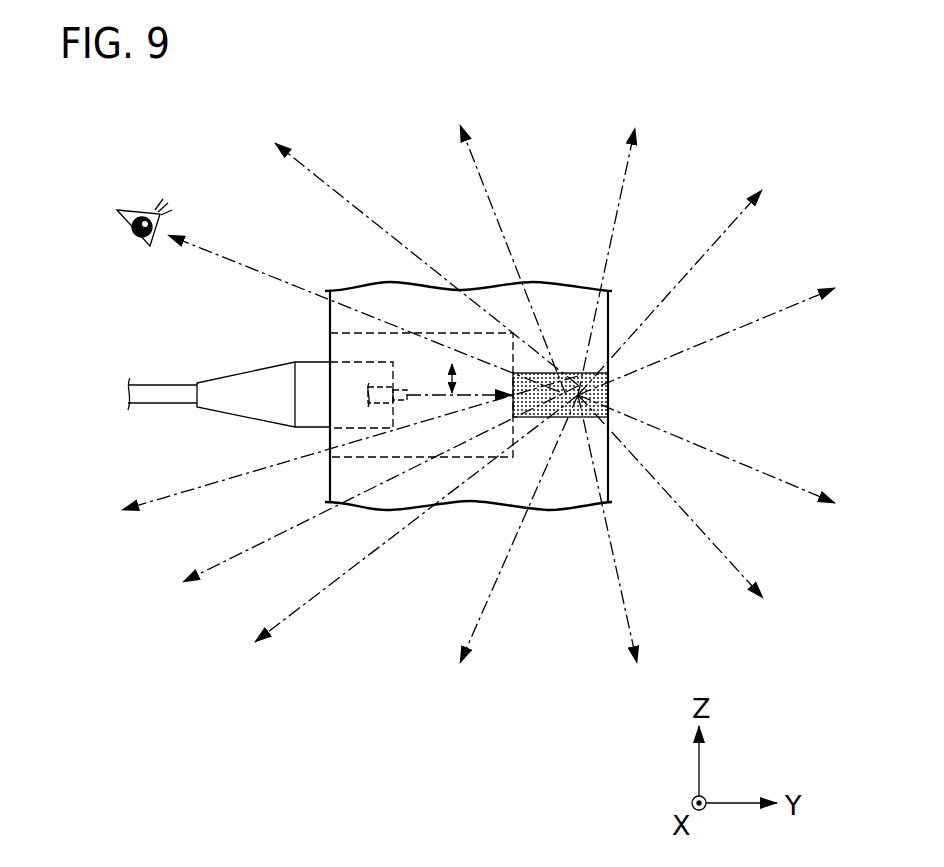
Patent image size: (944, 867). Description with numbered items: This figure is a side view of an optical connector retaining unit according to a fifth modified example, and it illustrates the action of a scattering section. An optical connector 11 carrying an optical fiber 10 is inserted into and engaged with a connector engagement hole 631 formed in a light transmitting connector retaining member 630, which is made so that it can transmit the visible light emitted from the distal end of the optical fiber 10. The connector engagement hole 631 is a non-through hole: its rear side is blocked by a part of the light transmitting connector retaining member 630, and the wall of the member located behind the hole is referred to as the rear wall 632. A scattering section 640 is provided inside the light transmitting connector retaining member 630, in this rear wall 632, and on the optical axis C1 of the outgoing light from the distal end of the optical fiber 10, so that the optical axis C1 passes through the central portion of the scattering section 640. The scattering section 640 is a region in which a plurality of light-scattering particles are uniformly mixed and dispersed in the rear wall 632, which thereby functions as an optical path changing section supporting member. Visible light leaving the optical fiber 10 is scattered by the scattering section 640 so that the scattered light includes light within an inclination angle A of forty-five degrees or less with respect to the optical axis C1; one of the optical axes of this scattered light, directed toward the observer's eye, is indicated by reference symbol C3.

The optical fiber 10 is at (158, 405).
The optical connector 11 is at (312, 428).
The light transmitting connector retaining member 630 is at (329, 321).
The connector engagement hole 631 is at (380, 452).
The rear wall 632 is at (610, 372).
The scattering section 640 is at (610, 396).
The inclination angle A is at (450, 362).
The optical axis C1 is at (478, 398).
The optical axis of scattered light C3 is at (234, 262).